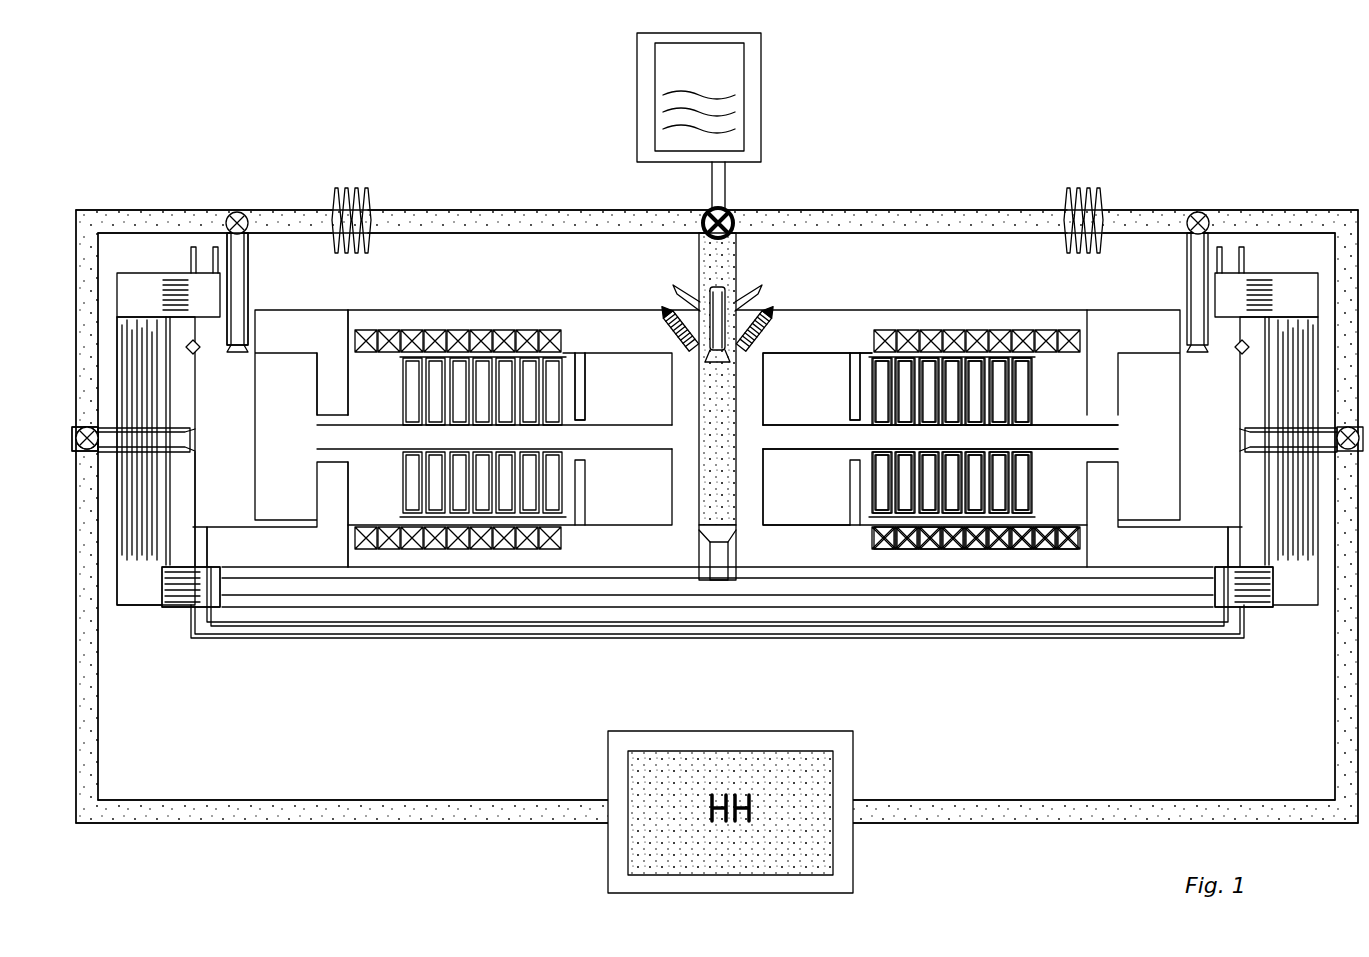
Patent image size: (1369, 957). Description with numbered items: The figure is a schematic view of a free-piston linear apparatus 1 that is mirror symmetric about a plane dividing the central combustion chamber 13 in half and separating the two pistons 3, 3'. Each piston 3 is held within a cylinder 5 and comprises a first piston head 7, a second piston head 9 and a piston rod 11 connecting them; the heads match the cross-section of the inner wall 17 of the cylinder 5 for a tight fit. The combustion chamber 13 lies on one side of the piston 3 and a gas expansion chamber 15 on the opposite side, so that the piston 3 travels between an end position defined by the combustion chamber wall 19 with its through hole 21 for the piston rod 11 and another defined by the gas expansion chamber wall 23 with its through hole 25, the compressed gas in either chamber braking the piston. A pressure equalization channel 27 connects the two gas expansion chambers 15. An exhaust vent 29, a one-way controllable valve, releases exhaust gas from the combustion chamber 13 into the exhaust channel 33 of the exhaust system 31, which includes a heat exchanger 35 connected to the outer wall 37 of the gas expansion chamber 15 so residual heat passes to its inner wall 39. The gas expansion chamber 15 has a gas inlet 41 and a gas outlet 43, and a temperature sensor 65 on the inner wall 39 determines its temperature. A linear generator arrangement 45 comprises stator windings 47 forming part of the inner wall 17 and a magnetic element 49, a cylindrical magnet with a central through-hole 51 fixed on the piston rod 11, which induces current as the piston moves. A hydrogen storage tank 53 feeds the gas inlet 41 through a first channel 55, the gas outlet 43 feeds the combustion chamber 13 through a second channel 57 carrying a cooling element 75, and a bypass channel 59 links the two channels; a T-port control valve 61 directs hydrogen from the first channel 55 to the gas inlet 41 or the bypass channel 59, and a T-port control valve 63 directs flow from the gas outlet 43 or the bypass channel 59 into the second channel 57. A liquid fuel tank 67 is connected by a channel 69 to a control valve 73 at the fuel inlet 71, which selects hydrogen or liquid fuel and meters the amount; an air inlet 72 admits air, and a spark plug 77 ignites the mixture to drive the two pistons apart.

The free-piston linear apparatus 1 is at (1063, 131).
The piston 3 is at (940, 366).
The piston 3' is at (331, 417).
The cylinder 5 is at (800, 330).
The first piston head 7 is at (760, 370).
The second piston head 9 is at (1145, 365).
The piston rod 11 is at (835, 425).
The combustion chamber 13 is at (705, 460).
The gas expansion chamber 15 is at (1225, 360).
The inner wall 17 is at (815, 520).
The combustion chamber wall 19 is at (590, 400).
The through hole 21 is at (570, 420).
The gas expansion chamber wall 23 is at (305, 520).
The through hole 25 is at (330, 412).
The pressure equalization channel 27 is at (335, 636).
The exhaust vent 29 is at (718, 565).
The exhaust system 31 is at (565, 607).
The exhaust channel 33 is at (470, 590).
The heat exchanger 35 is at (136, 300).
The outer wall 37 is at (165, 560).
The inner wall 39 is at (192, 510).
The gas inlet 41 is at (150, 432).
The gas outlet 43 is at (250, 290).
The linear generator arrangement 45 is at (1032, 563).
The stator windings 47 is at (975, 545).
The magnetic element 49 is at (945, 485).
The central through-hole 51 is at (1020, 435).
The hydrogen storage tank 53 is at (853, 780).
The first channel 55 is at (305, 810).
The second channel 57 is at (480, 222).
The bypass channel 59 is at (90, 222).
The control valve 61 is at (85, 432).
The control valve 63 is at (237, 305).
The temperature sensor 65 is at (1250, 365).
The liquid fuel tank 67 is at (761, 93).
The channel 69 is at (721, 187).
The fuel inlet 71 is at (718, 288).
The air inlet 72 is at (690, 305).
The control valve 73 is at (740, 228).
The cooling element 75 is at (365, 215).
The spark plug 77 is at (745, 296).